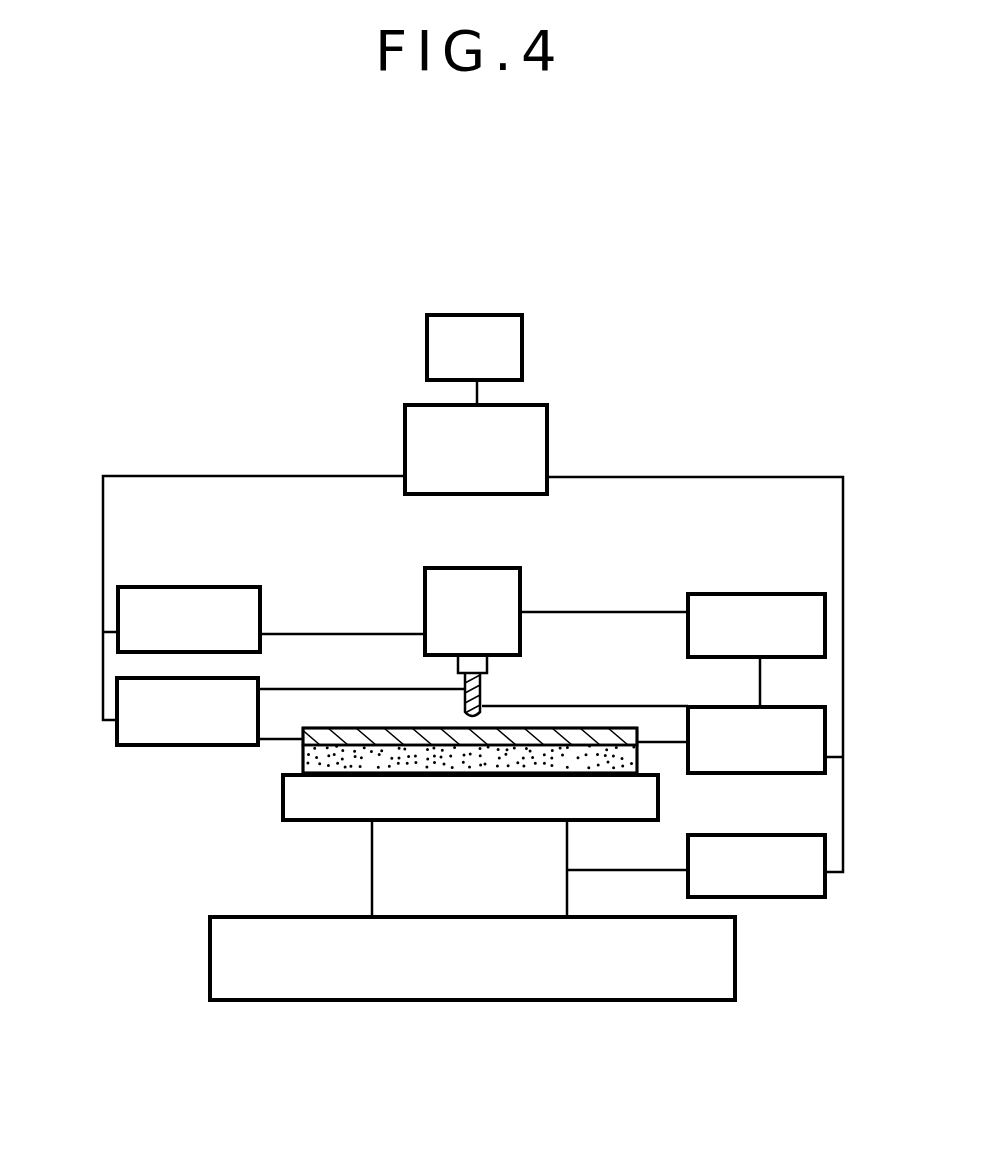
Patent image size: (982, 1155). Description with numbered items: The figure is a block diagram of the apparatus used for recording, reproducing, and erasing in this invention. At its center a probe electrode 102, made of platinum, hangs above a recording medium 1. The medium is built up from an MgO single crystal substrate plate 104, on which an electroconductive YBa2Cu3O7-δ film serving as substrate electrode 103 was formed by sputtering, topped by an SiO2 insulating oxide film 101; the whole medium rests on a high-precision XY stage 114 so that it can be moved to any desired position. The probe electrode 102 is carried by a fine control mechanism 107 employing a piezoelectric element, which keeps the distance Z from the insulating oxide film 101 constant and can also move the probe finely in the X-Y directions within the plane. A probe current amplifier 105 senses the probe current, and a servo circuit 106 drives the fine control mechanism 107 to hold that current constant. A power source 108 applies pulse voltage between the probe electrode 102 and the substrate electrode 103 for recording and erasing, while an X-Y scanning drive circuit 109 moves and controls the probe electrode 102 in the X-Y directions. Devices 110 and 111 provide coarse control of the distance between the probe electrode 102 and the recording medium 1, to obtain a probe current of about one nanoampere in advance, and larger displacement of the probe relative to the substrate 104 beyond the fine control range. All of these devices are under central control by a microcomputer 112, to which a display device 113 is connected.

The recording medium 1 is at (645, 762).
The insulating oxide film 101 is at (530, 726).
The probe electrode 102 is at (484, 686).
The substrate electrode 103 is at (358, 735).
The substrate 104 is at (315, 757).
The probe current amplifier 105 is at (720, 722).
The servo circuit 106 is at (755, 610).
The fine control mechanism 107 is at (505, 591).
The power source 108 is at (138, 752).
The X-Y scanning drive circuit 109 is at (195, 600).
The coarse control device 110 is at (390, 893).
The coarse control device 111 is at (795, 883).
The microcomputer 112 is at (547, 440).
The display device 113 is at (520, 348).
The XY stage 114 is at (345, 800).